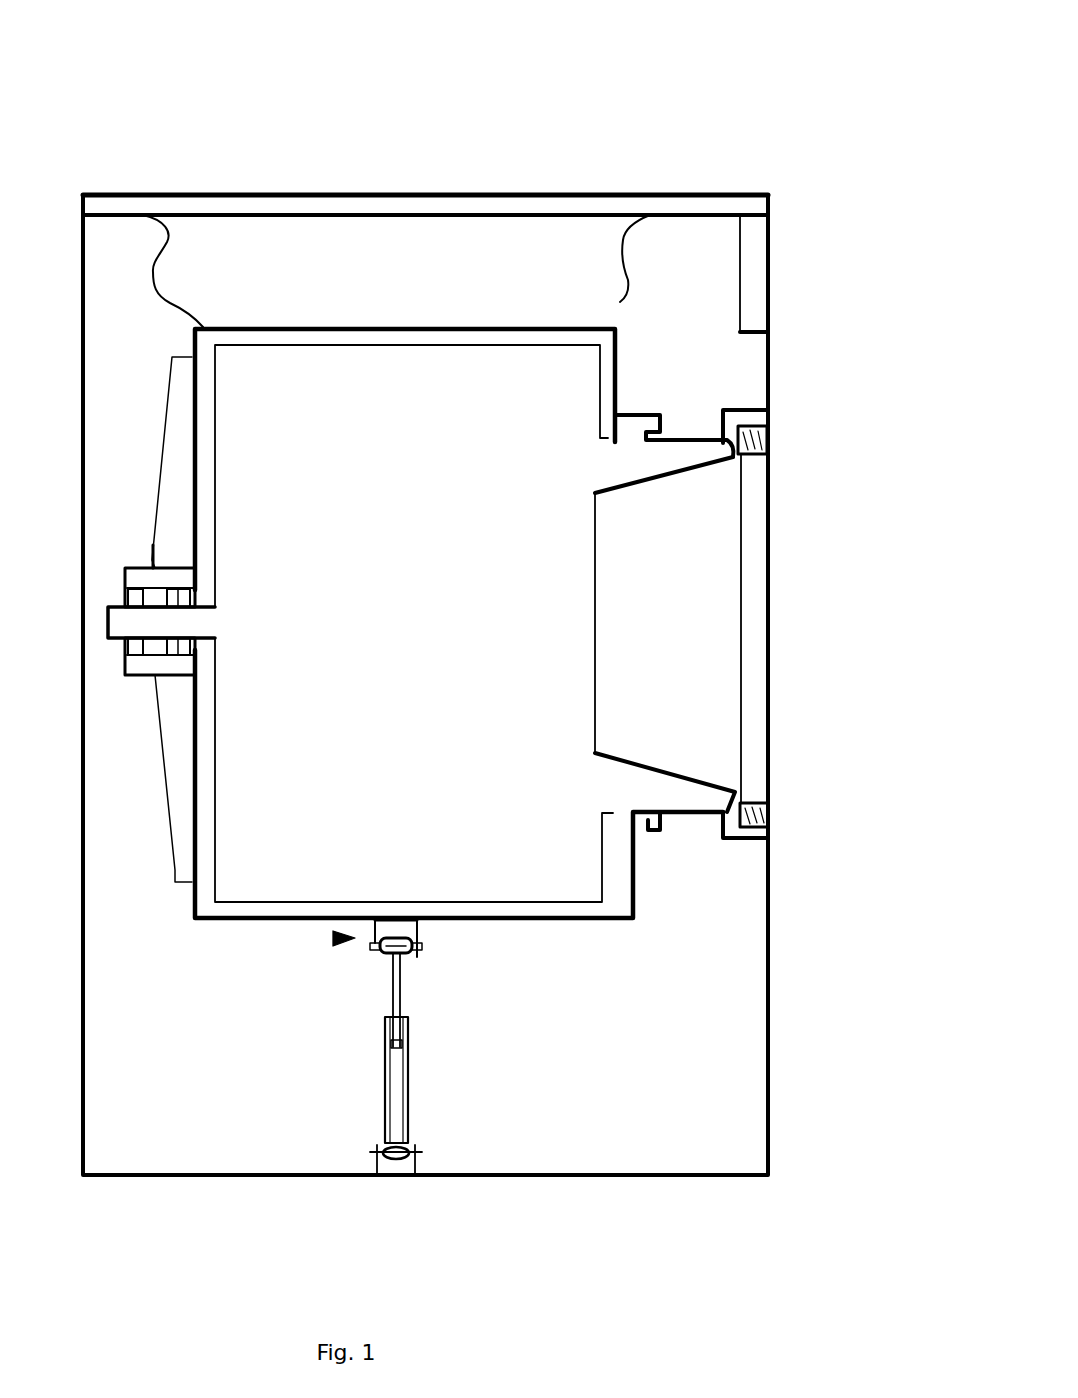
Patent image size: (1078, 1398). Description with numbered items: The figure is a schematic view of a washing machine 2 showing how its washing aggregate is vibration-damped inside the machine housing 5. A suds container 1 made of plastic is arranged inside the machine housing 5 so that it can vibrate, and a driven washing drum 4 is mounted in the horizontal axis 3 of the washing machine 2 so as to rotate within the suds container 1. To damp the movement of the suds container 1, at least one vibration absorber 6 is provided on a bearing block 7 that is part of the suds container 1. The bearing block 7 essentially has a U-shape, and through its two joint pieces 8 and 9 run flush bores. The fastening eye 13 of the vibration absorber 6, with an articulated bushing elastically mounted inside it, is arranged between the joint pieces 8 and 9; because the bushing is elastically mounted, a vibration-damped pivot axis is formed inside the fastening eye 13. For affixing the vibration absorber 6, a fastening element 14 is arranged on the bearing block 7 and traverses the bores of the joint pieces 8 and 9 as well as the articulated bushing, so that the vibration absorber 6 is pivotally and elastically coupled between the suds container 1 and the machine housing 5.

The suds container 1 is at (512, 327).
The washing machine 2 is at (418, 165).
The horizontal axis 3 is at (158, 617).
The washing drum 4 is at (540, 345).
The machine housing 5 is at (553, 205).
The vibration absorber 6 is at (393, 1063).
The bearing block 7 is at (335, 940).
The joint piece 8 is at (374, 948).
The joint piece 9 is at (420, 930).
The fastening eye 13 is at (407, 958).
The fastening element 14 is at (422, 944).